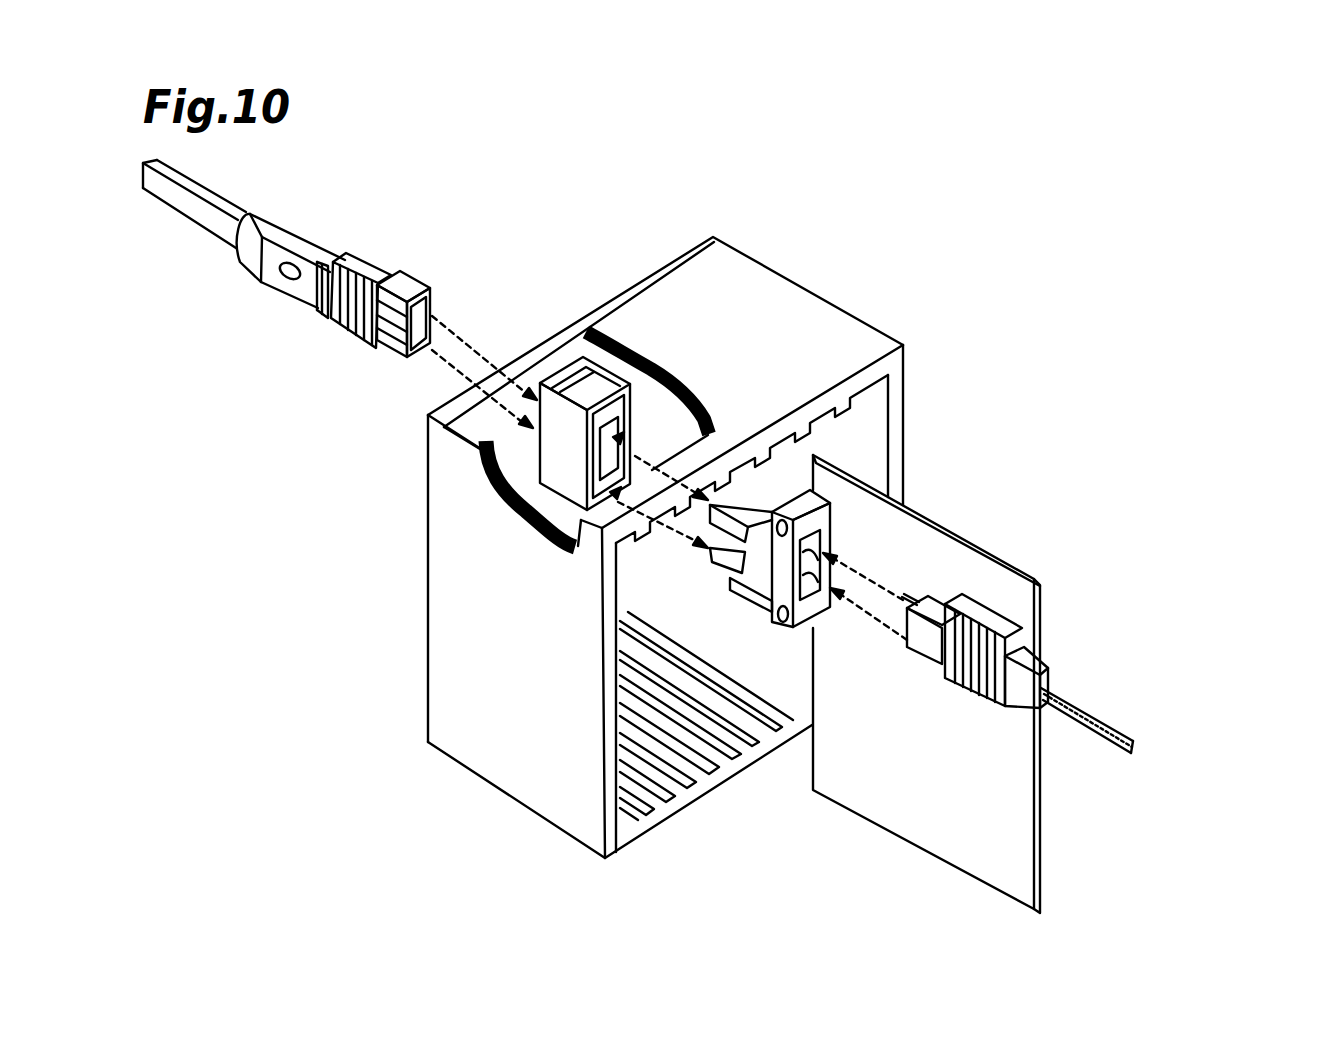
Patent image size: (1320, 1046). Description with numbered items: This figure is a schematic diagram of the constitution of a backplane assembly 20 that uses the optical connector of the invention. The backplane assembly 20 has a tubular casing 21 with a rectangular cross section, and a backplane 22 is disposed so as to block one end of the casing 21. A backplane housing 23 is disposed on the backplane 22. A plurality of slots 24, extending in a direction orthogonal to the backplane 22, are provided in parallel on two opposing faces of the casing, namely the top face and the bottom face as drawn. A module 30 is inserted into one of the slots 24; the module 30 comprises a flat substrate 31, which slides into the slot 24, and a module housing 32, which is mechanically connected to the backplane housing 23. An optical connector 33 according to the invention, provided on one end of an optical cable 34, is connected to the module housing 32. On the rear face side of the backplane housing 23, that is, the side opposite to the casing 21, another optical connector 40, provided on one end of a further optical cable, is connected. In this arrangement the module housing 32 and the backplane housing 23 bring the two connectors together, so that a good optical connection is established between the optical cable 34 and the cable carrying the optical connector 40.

The backplane assembly 20 is at (870, 282).
The tubular casing 21 is at (488, 782).
The backplane 22 is at (597, 361).
The backplane housing 23 is at (528, 498).
The slots 24 is at (757, 735).
The module 30 is at (1056, 573).
The flat substrate 31 is at (1005, 656).
The module housing 32 is at (704, 697).
The optical connector 33 is at (1040, 652).
The optical cable 34 is at (1105, 731).
The optical connector 40 is at (330, 263).